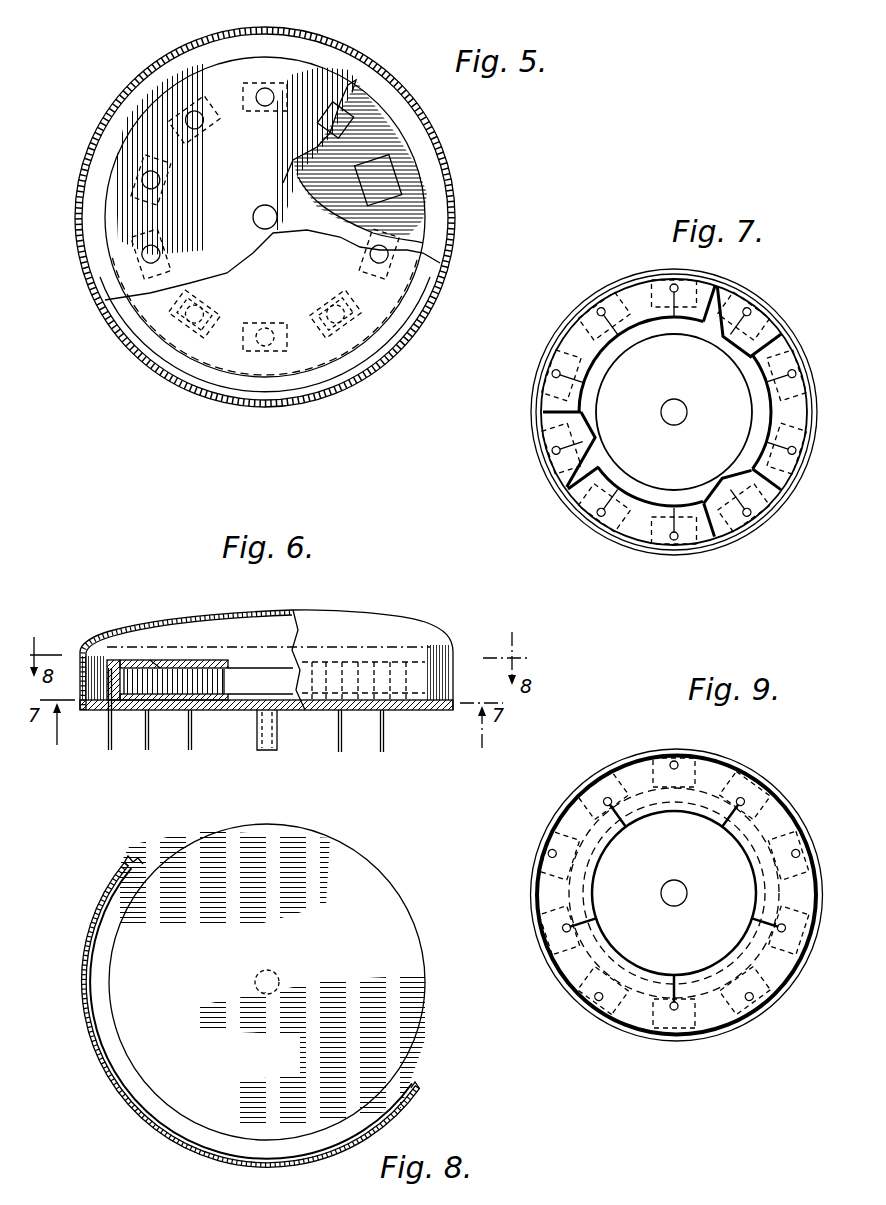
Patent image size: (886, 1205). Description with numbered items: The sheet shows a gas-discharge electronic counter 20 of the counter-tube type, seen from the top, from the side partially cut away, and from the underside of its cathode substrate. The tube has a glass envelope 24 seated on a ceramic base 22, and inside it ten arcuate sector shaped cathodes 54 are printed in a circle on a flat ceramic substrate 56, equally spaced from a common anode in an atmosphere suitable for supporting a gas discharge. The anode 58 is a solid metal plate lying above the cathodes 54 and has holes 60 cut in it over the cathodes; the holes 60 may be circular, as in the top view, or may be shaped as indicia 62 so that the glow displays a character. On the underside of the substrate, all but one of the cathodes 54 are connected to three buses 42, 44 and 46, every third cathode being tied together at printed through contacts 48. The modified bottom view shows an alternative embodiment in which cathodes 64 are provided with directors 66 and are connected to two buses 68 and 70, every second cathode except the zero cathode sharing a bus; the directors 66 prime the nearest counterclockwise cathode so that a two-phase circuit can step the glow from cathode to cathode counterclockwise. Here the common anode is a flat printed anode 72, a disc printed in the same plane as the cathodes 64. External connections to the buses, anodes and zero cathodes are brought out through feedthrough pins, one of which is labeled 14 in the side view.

In FIG. 6, the terminal pins 14 is at (112, 748).
In FIG. 5, the electronic counter 20 is at (285, 233).
In FIG. 6, the electronic counter 20 is at (266, 680).
In FIG. 5, the ceramic base 22 is at (430, 190).
In FIG. 6, the ceramic base 22 is at (300, 711).
In FIG. 5, the glass envelope 24 is at (310, 382).
In FIG. 6, the glass envelope 24 is at (378, 624).
In FIG. 8, the glass envelope 24 is at (168, 1140).
In FIG. 7, the bus 42 is at (655, 332).
In FIG. 7, the bus 44 is at (593, 345).
In FIG. 7, the bus 46 is at (535, 397).
In FIG. 7, the printed through contacts 48 is at (767, 380).
In FIG. 5, the arcuate sector shaped cathodes 54 is at (343, 130).
In FIG. 7, the arcuate sector shaped cathodes 54 is at (633, 272).
In FIG. 6, the arcuate sector shaped cathodes 54 is at (163, 690).
In FIG. 5, the ceramic substrate 56 is at (417, 222).
In FIG. 7, the ceramic substrate 56 is at (660, 478).
In FIG. 6, the ceramic substrate 56 is at (172, 690).
In FIG. 5, the anode 58 is at (122, 226).
In FIG. 6, the anode 58 is at (130, 663).
In FIG. 8, the anode 58 is at (120, 943).
In FIG. 5, the holes 60 is at (193, 120).
In FIG. 6, the holes 60 is at (155, 665).
In FIG. 8, the indicia 62 is at (377, 938).
In FIG. 9, the cathodes 64 is at (674, 764).
In FIG. 9, the directors 66 is at (638, 778).
In FIG. 9, the bus 68 is at (693, 815).
In FIG. 9, the bus 70 is at (562, 808).
In FIG. 9, the flat printed anode 72 is at (597, 1017).